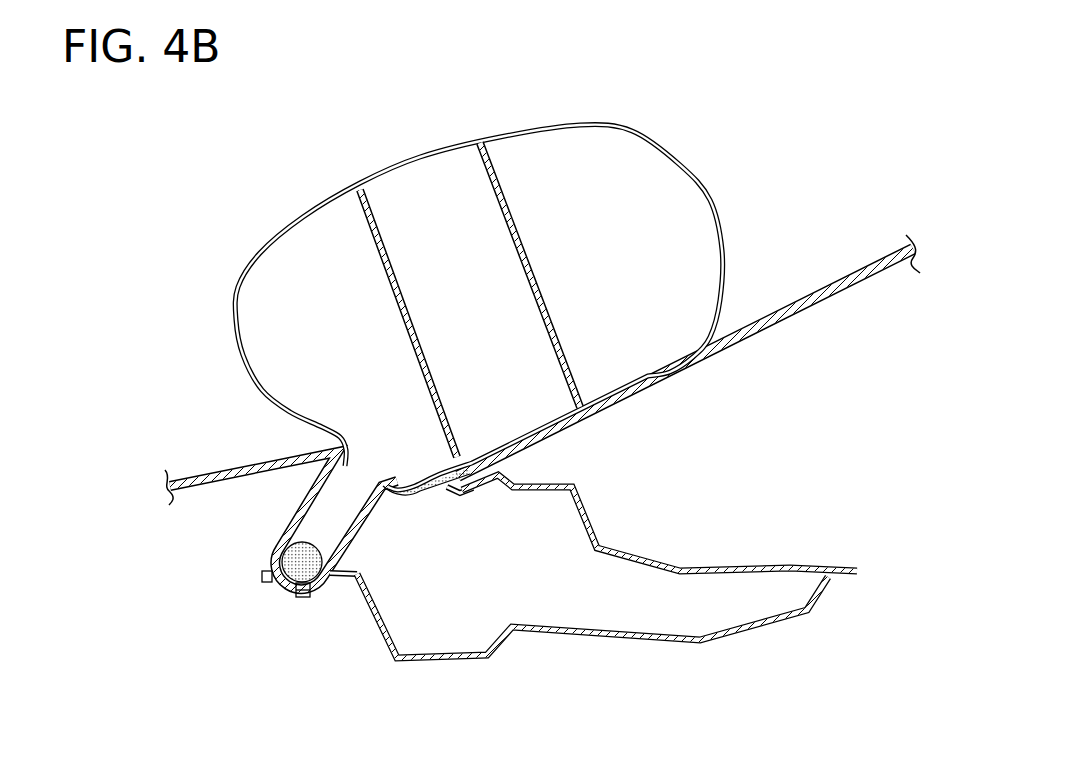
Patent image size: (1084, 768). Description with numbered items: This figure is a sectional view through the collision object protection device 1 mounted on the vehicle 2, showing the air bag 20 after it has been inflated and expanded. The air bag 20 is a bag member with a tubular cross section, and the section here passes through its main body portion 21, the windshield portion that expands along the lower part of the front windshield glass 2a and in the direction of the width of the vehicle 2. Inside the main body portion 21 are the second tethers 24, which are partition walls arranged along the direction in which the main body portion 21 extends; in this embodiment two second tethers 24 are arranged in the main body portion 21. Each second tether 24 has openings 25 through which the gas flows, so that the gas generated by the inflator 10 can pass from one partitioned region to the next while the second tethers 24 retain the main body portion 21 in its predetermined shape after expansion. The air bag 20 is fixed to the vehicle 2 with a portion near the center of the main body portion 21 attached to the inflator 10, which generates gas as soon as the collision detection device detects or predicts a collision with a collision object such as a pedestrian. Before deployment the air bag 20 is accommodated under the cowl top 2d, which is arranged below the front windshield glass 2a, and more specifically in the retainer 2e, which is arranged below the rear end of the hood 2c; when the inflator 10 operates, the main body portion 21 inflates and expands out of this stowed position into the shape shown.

The collision object protection device 1 is at (255, 562).
The vehicle 2 is at (807, 298).
The front windshield glass 2a is at (777, 325).
The hood 2c is at (207, 469).
The cowl top 2d is at (413, 497).
The retainer 2e is at (333, 590).
The inflator 10 is at (273, 590).
The air bag 20 is at (714, 190).
The main body portion 21 is at (577, 126).
The second tether 24 is at (505, 224).
The opening 25 is at (408, 318).